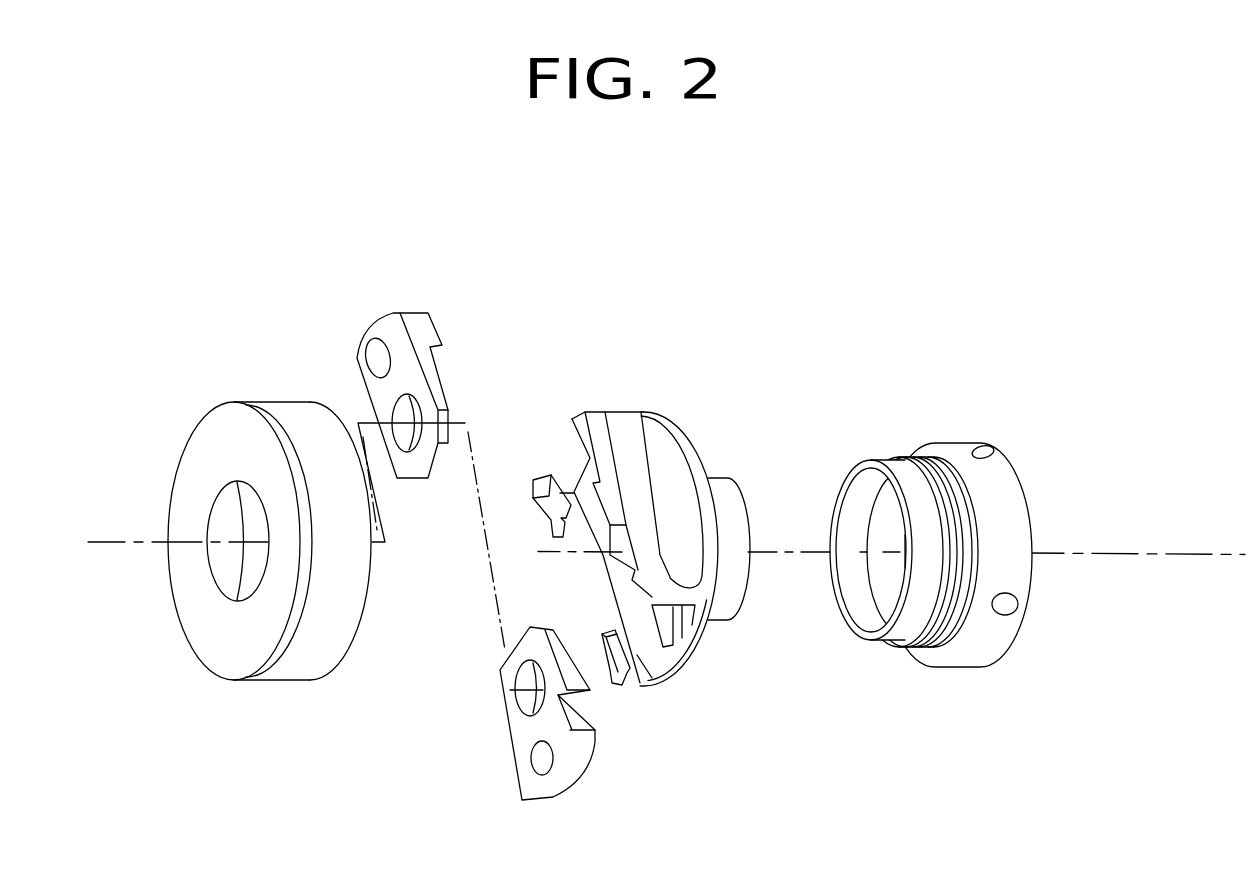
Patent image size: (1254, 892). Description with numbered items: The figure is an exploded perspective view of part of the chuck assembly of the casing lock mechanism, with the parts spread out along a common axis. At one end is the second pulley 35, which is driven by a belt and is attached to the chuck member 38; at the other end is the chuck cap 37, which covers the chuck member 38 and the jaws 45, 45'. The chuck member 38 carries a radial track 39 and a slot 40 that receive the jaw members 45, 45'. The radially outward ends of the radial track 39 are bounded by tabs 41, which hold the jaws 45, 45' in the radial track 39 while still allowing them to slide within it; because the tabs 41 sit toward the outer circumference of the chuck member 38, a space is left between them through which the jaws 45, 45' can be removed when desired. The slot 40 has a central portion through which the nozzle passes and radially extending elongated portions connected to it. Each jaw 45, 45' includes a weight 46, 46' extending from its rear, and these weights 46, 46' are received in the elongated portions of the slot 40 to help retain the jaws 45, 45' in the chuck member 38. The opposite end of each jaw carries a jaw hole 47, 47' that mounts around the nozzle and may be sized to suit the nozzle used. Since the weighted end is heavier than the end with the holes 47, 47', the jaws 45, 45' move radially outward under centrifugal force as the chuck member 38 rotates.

The second pulley 35 is at (952, 404).
The chuck cap 37 is at (188, 390).
The chuck member 38 is at (602, 378).
The radial track 39 is at (642, 680).
The slot 40 is at (673, 632).
The tabs 41 is at (545, 475).
The jaw 45 is at (402, 329).
The jaw 45' is at (542, 759).
The weight 46 is at (333, 316).
The weight 46' is at (483, 797).
The jaw hole 47 is at (323, 365).
The jaw hole 47' is at (475, 711).